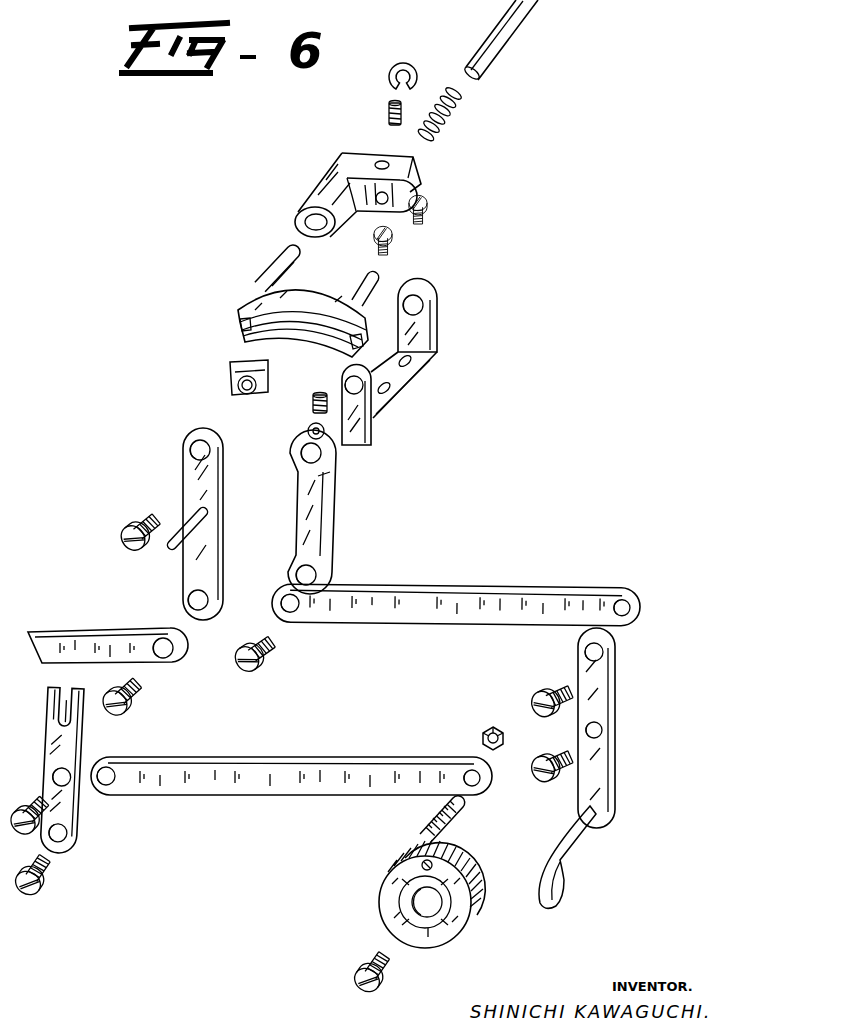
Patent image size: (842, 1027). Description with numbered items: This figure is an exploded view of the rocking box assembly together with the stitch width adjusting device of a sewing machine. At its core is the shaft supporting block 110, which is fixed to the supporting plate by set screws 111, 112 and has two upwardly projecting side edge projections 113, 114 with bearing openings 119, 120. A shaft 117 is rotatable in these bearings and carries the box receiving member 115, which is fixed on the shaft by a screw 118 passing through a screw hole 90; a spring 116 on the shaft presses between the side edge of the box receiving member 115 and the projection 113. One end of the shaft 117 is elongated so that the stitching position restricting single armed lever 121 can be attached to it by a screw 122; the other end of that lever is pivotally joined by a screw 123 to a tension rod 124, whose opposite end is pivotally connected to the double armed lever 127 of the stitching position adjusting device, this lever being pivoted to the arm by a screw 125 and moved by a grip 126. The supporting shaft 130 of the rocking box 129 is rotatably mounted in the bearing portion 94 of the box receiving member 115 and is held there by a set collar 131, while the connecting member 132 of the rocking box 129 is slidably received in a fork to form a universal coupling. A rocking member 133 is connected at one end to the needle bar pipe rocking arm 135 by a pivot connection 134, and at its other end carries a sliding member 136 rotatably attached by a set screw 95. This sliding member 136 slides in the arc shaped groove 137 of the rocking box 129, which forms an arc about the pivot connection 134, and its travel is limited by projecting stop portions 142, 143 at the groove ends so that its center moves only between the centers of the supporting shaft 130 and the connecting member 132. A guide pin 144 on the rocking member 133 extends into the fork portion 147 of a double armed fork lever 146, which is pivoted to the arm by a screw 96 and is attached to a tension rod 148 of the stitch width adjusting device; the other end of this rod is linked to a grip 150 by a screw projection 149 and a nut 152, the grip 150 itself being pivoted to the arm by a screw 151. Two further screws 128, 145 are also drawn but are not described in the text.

The screw hole 90 is at (363, 195).
The bearing portion 94 is at (296, 224).
The set screw 95 is at (148, 518).
The screw 96 is at (45, 884).
The shaft supporting block 110 is at (393, 411).
The set screw 111 is at (428, 203).
The set screw 112 is at (394, 238).
The side edge projection 113 is at (446, 314).
The side edge projection 114 is at (395, 377).
The box receiving member 115 is at (326, 197).
The spring 116 is at (458, 103).
The shaft 117 is at (512, 30).
The screw 118 is at (386, 109).
The bearing opening 119 is at (428, 307).
The bearing opening 120 is at (370, 390).
The stitching position restricting single armed lever 121 is at (326, 510).
The screw 122 is at (312, 405).
The screw 123 is at (265, 673).
The tension rod 124 is at (462, 613).
The screw 125 is at (538, 785).
The grip 126 is at (542, 910).
The double armed lever 127 is at (590, 672).
The screw 128 is at (530, 699).
The rocking box 129 is at (269, 330).
The supporting shaft 130 is at (290, 270).
The set collar 131 is at (412, 63).
The connecting member 132 is at (374, 280).
The rocking member 133 is at (215, 478).
The pivot connection 134 is at (135, 712).
The needle bar pipe rocking arm 135 is at (122, 640).
The sliding member 136 is at (230, 376).
The arc shaped groove 137 is at (302, 320).
The projecting stop portion 142 is at (238, 323).
The projecting stop portion 143 is at (355, 340).
The guide pin 144 is at (172, 548).
The screw 145 is at (26, 810).
The double armed fork lever 146 is at (93, 772).
The fork portion 147 is at (65, 718).
The tension rod 148 is at (227, 790).
The screw projection 149 is at (444, 833).
The grip 150 is at (428, 948).
The screw 151 is at (384, 994).
The nut 152 is at (481, 741).